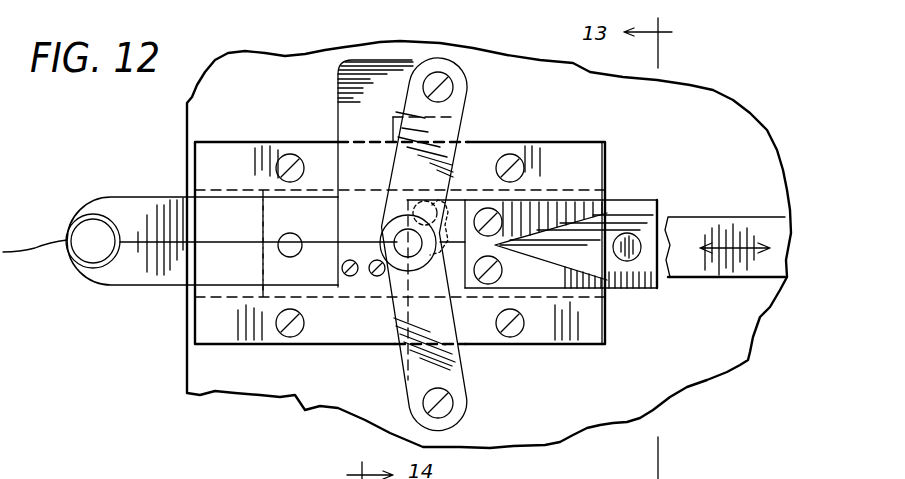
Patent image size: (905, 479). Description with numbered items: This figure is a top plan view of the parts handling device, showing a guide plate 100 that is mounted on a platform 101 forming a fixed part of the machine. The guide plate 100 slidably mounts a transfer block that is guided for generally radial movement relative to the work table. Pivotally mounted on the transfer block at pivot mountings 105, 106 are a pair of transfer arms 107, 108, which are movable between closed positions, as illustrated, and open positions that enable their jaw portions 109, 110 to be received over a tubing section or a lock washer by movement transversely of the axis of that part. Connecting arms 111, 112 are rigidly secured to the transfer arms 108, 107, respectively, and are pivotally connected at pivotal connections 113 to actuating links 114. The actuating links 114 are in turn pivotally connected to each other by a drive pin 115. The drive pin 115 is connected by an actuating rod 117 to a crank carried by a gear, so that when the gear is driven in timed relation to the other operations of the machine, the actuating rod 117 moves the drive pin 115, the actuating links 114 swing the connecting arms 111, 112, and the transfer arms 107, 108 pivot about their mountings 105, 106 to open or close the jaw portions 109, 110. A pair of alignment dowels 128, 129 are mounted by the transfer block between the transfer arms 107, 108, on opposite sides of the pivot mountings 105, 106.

The guide plate 100 is at (352, 333).
The platform 101 is at (567, 428).
The pivot mounting 105 is at (510, 200).
The pivot mounting 106 is at (500, 268).
The transfer arm 107 is at (206, 215).
The transfer arm 108 is at (222, 268).
The jaw portion 109 is at (82, 213).
The jaw portion 110 is at (72, 262).
The connecting arm 111 is at (365, 125).
The connecting arm 112 is at (458, 322).
The pivotal connection 113 is at (450, 82).
The actuating link 114 is at (458, 133).
The drive pin 115 is at (397, 235).
The actuating rod 117 is at (685, 230).
The alignment dowel 128 is at (285, 254).
The alignment dowel 129 is at (632, 262).